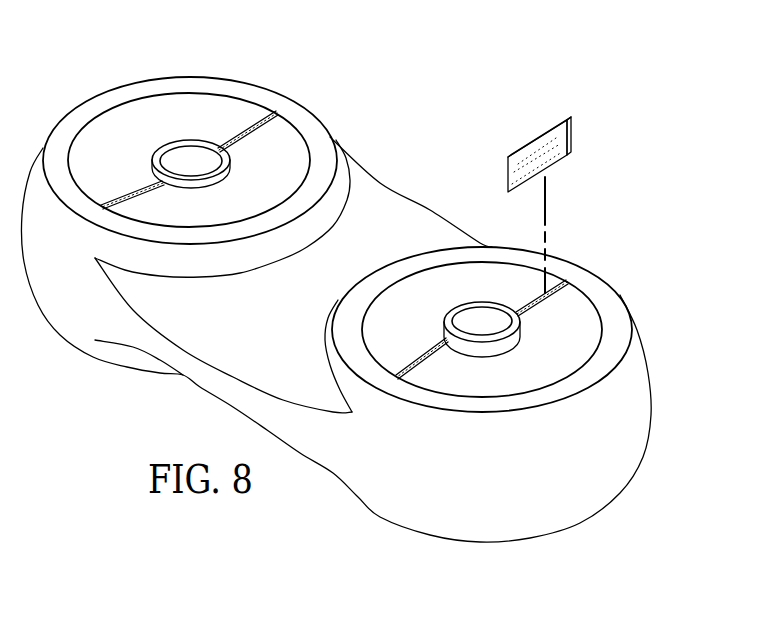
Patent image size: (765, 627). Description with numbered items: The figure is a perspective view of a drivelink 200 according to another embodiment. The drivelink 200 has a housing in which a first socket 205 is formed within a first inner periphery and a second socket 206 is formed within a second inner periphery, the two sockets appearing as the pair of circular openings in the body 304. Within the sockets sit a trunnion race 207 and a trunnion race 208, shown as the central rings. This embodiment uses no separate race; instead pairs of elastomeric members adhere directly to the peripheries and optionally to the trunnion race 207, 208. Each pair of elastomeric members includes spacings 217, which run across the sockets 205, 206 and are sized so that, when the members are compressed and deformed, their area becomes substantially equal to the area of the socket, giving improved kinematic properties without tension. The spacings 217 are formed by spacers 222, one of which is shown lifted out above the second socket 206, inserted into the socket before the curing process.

The drivelink 200 is at (487, 93).
The first socket 205 is at (297, 122).
The second socket 206 is at (590, 291).
The trunnion race 207 is at (180, 155).
The trunnion race 208 is at (480, 318).
The spacing 217 is at (558, 282).
The spacer 222 is at (258, 115).
The case body 304 is at (638, 325).